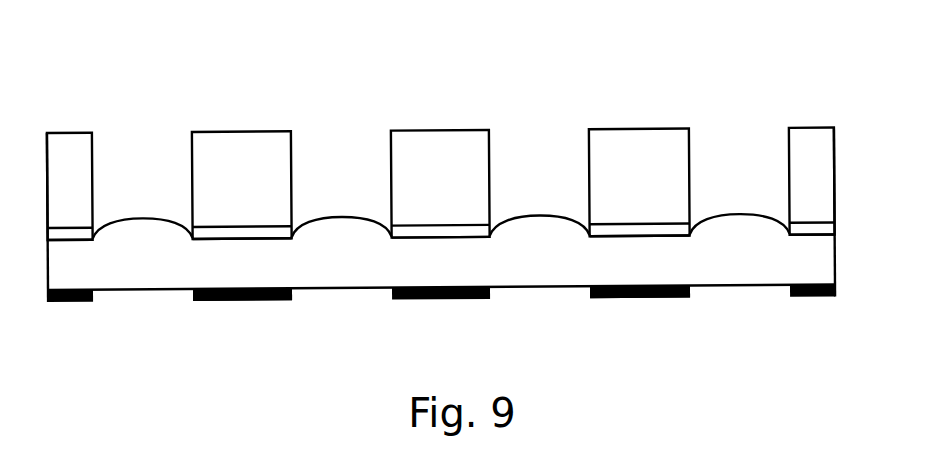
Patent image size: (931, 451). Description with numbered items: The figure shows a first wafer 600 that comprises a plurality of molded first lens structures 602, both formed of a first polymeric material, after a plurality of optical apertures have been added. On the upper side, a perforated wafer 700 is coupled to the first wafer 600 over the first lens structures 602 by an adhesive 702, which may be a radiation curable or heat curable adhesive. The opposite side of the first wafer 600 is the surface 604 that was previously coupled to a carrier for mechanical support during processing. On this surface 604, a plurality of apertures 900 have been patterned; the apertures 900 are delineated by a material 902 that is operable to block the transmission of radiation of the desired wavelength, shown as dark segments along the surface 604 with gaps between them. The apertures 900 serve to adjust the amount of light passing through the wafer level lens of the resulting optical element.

The first wafer 600 is at (163, 272).
The first lens structures 602 is at (525, 233).
The surface 604 is at (723, 290).
The perforated wafer 700 is at (425, 129).
The adhesive 702 is at (640, 203).
The apertures 900 is at (543, 290).
The material 902 is at (265, 302).